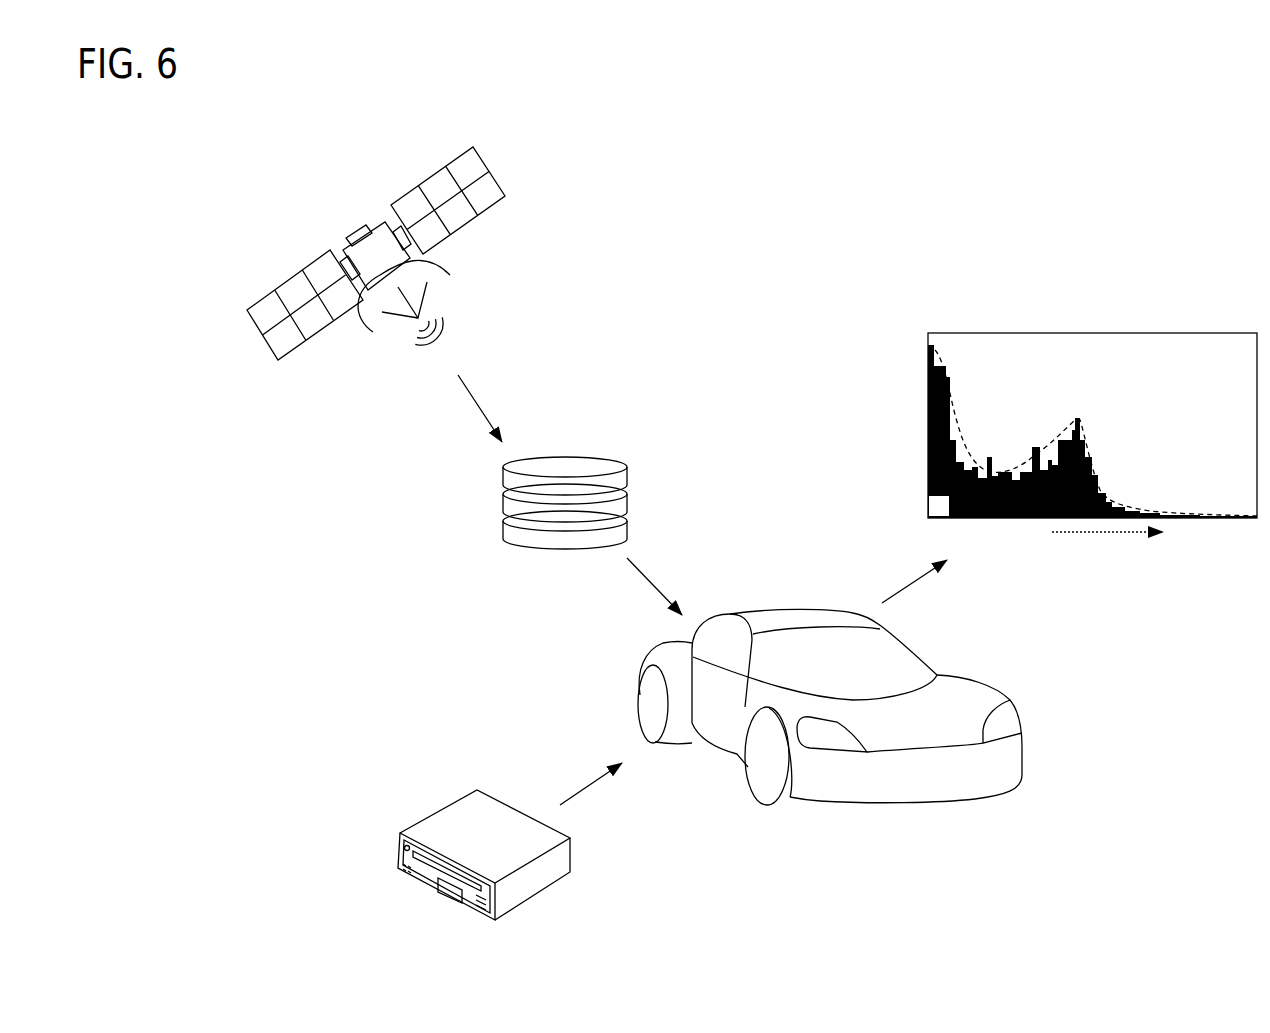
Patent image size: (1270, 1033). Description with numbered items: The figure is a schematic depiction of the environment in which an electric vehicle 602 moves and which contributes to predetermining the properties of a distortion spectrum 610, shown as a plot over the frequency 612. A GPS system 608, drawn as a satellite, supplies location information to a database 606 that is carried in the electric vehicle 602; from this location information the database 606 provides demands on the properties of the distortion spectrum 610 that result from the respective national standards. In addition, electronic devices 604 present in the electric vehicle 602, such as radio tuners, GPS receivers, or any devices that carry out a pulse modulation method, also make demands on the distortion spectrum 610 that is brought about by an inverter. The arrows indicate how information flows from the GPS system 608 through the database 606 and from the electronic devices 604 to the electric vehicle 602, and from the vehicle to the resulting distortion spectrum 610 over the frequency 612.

The electric vehicle 602 is at (895, 782).
The electronic devices 604 is at (450, 835).
The database 606 is at (523, 508).
The GPS system 608 is at (265, 310).
The distortion spectrum 610 is at (1082, 333).
The frequency 612 is at (1107, 552).